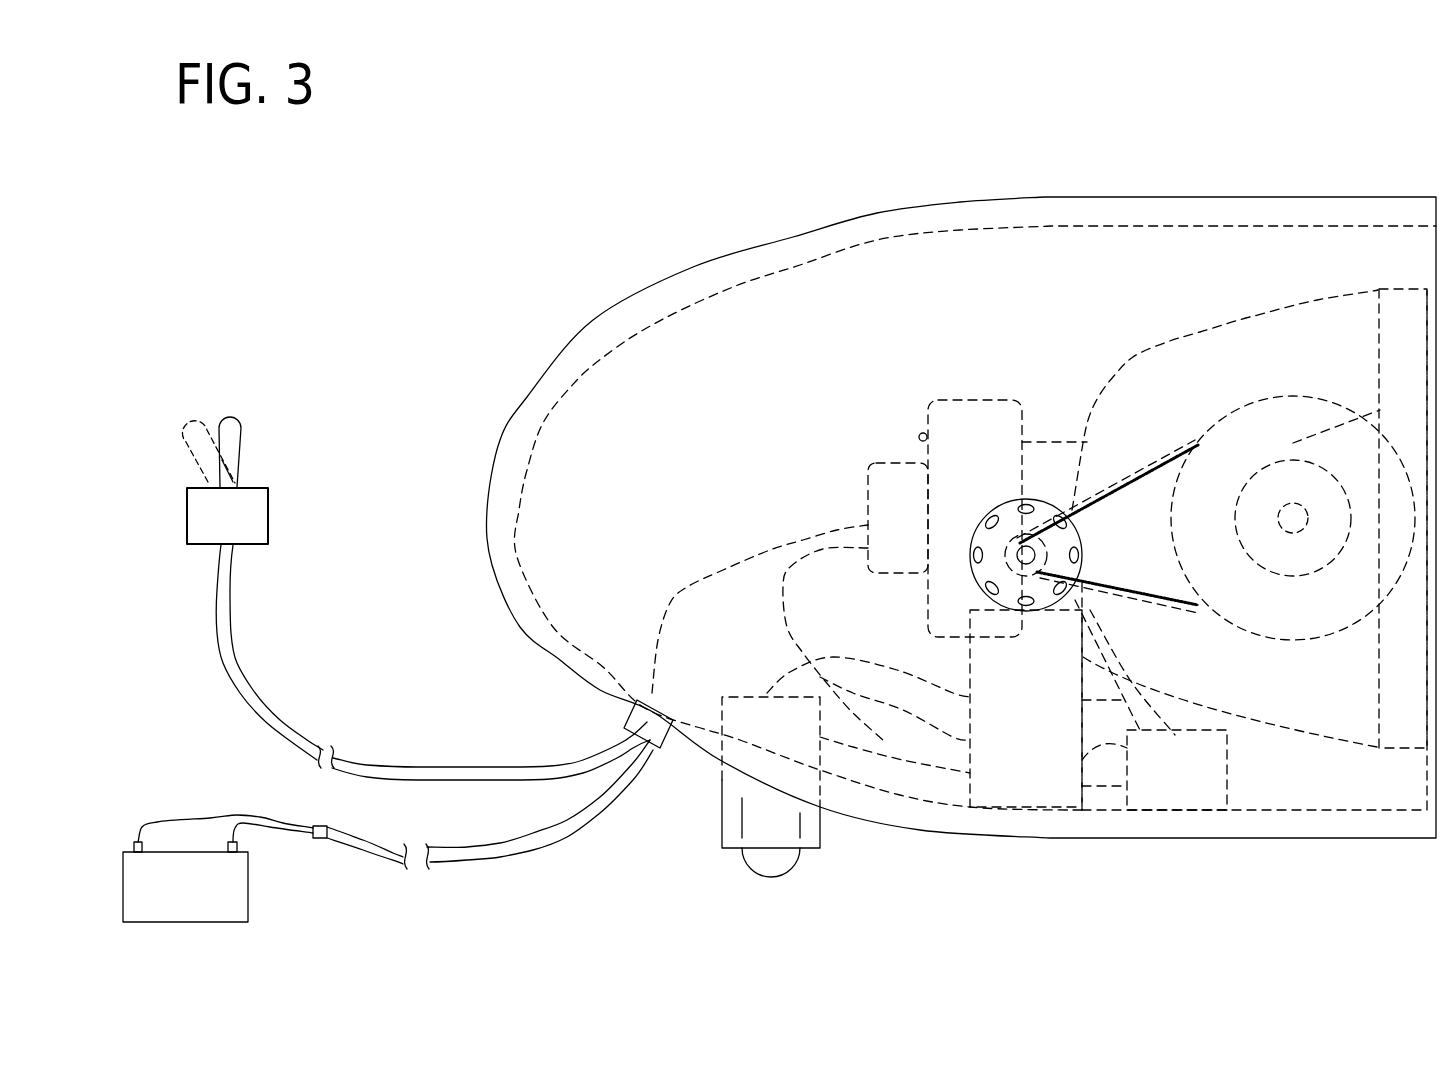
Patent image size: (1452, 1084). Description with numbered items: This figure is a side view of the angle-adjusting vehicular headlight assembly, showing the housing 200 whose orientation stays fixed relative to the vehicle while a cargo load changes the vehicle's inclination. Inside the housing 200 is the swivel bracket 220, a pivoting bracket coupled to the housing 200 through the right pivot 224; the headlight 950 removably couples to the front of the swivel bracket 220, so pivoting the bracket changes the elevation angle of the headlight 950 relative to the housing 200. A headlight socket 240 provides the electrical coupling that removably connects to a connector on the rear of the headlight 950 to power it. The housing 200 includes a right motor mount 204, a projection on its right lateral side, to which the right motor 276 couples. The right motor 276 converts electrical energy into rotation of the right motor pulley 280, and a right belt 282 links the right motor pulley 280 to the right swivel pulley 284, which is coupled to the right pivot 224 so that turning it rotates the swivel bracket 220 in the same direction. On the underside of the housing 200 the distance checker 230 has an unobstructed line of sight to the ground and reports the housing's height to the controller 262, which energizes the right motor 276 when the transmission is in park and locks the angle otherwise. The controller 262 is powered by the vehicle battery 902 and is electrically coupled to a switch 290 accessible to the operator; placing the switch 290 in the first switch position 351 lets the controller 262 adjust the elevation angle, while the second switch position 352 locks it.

The housing 200 is at (665, 290).
The right motor mount 204 is at (1020, 783).
The swivel bracket 220 is at (1403, 737).
The right pivot 224 is at (1293, 505).
The distance checker 230 is at (733, 827).
The headlight socket 240 is at (924, 432).
The controller 262 is at (1207, 795).
The right motor 276 is at (1042, 500).
The right motor pulley 280 is at (1017, 567).
The right belt 282 is at (1157, 603).
The right swivel pulley 284 is at (1297, 642).
The switch 290 is at (418, 634).
The first switch position 351 is at (239, 418).
The second switch position 352 is at (181, 433).
The vehicle battery 902 is at (217, 903).
The headlight 950 is at (1268, 347).